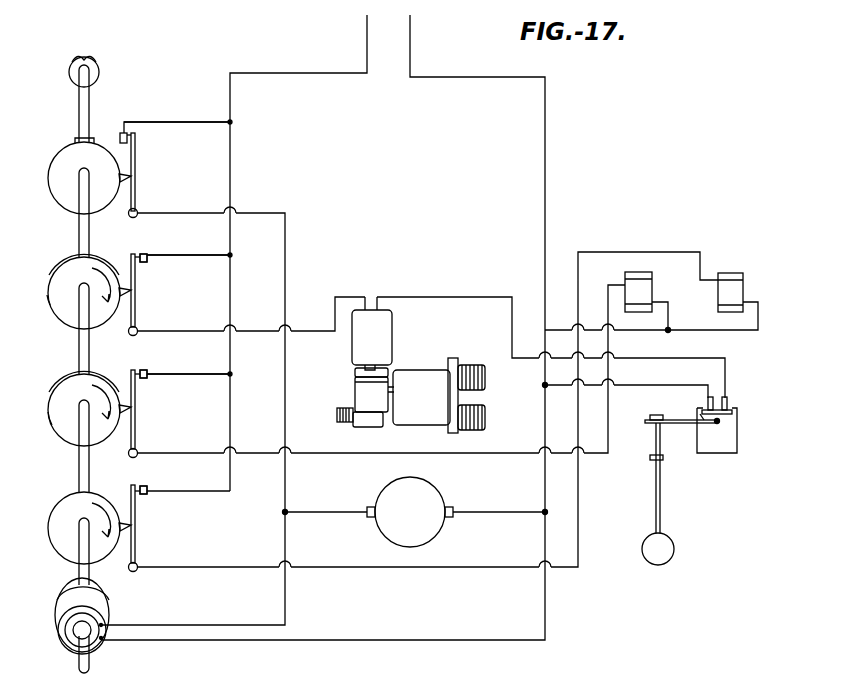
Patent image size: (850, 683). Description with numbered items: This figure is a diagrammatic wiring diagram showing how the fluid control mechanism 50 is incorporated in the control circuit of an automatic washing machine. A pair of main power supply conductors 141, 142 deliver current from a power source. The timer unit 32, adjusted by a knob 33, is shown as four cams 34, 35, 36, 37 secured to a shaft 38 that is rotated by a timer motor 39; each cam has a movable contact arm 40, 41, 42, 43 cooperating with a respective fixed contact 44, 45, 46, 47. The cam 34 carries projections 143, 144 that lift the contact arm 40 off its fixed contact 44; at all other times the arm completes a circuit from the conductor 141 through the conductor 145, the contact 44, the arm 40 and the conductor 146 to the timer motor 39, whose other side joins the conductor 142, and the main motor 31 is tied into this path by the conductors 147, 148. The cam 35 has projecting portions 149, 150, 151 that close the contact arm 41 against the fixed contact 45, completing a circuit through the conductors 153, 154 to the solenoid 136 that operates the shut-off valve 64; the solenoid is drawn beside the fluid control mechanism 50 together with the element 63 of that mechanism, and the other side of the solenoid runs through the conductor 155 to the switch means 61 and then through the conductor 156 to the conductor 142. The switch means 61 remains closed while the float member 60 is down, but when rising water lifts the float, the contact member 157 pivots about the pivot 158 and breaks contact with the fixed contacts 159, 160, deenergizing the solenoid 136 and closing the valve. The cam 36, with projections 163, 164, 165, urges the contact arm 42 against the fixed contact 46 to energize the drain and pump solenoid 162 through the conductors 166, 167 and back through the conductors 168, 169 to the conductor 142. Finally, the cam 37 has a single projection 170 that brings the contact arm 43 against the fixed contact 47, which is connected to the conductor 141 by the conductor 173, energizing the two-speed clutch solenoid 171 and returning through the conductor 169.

The main motor 31 is at (436, 500).
The timer unit 32 is at (101, 101).
The knob 33 is at (97, 62).
The cam 34 is at (70, 190).
The cam 35 is at (62, 310).
The cam 36 is at (68, 420).
The cam 37 is at (70, 530).
The shaft 38 is at (78, 235).
The timer motor 39 is at (68, 605).
The movable contact arm 40 is at (136, 163).
The movable contact arm 41 is at (137, 312).
The movable contact arm 42 is at (137, 438).
The movable contact arm 43 is at (137, 552).
The fixed contact 44 is at (122, 132).
The fixed contact 45 is at (148, 255).
The fixed contact 46 is at (145, 369).
The fixed contact 47 is at (144, 487).
The fluid control mechanism 50 is at (409, 360).
The float member 60 is at (675, 549).
The switch means 61 is at (740, 423).
The solenoid terminals 63 is at (440, 367).
The shut-off valve 64 is at (356, 391).
The solenoid 136 is at (375, 310).
The main power supply conductor 141 is at (365, 50).
The main power supply conductor 142 is at (411, 48).
The projection 143 is at (123, 178).
The projection 144 is at (74, 140).
The conductor 145 is at (206, 122).
The conductor 146 is at (288, 258).
The conductor 147 is at (315, 511).
The conductor 148 is at (500, 511).
The projecting portion 149 is at (118, 262).
The projecting portion 150 is at (54, 288).
The projecting portion 151 is at (118, 326).
The conductor 153 is at (222, 258).
The conductor 154 is at (190, 333).
The conductor 155 is at (510, 297).
The conductor 156 is at (643, 386).
The contact member 157 is at (722, 426).
The pivot 158 is at (702, 430).
The fixed contact 159 is at (730, 399).
The fixed contact 160 is at (708, 403).
The solenoid 162 is at (635, 272).
The projection 163 is at (80, 373).
The projection 164 is at (76, 455).
The projection 165 is at (137, 415).
The conductor 166 is at (232, 380).
The conductor 167 is at (205, 455).
The conductor 168 is at (672, 320).
The conductor 169 is at (638, 335).
The projection 170 is at (137, 537).
The solenoid 171 is at (738, 297).
The conductor 173 is at (405, 568).